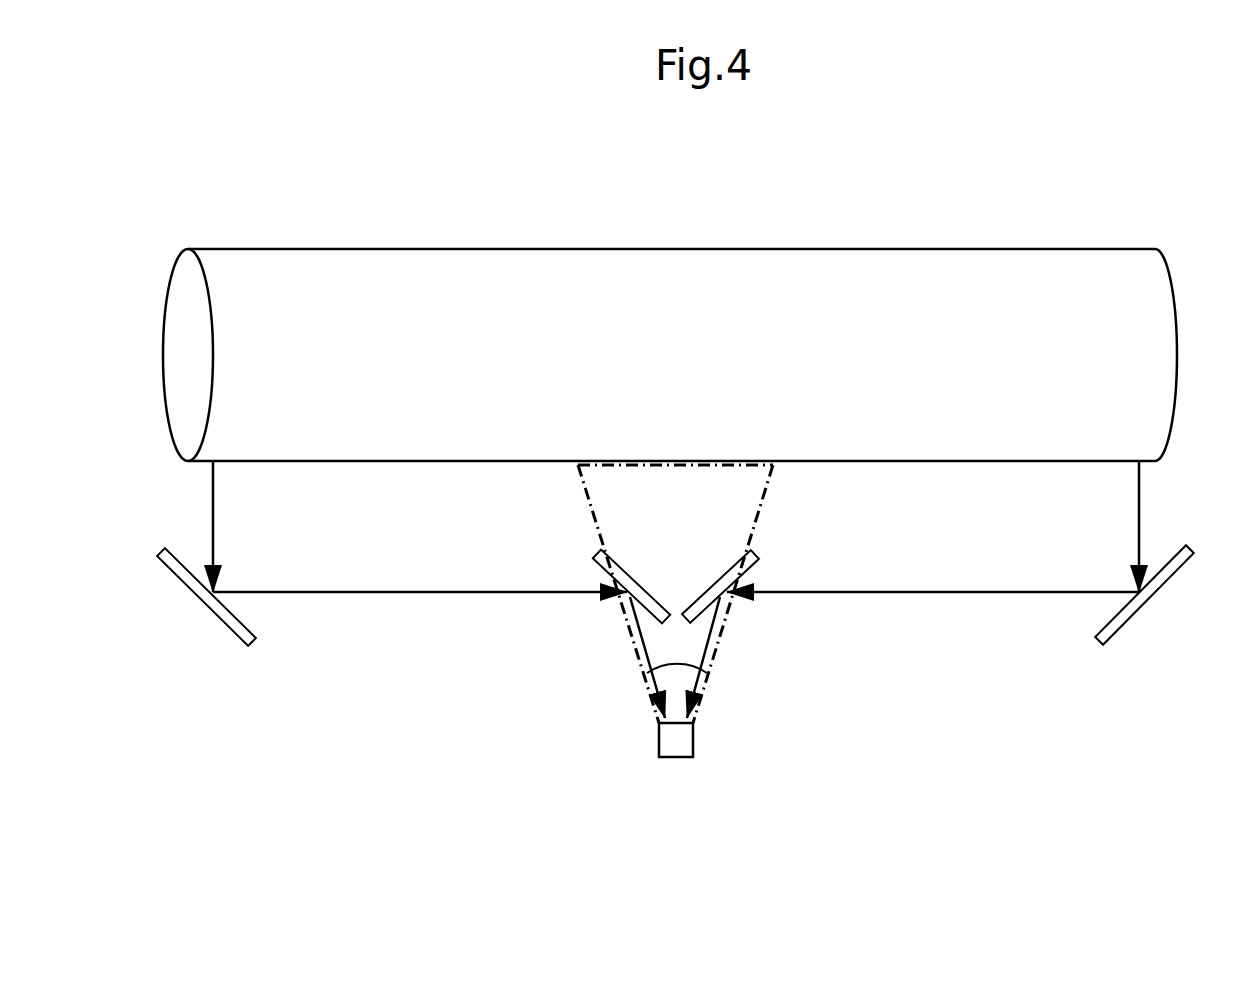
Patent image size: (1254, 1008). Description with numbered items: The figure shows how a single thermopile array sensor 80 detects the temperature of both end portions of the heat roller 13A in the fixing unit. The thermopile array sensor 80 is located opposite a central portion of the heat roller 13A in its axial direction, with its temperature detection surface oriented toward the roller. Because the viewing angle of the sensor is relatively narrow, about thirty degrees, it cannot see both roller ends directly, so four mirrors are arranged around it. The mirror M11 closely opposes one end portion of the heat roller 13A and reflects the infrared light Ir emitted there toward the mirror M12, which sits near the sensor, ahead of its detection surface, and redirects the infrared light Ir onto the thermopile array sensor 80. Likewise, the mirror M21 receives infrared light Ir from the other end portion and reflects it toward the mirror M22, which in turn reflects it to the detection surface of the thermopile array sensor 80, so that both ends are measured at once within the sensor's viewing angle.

The heat roller 13A is at (990, 249).
The infrared light Ir is at (215, 515).
The mirror M11 is at (210, 610).
The mirror M12 is at (593, 550).
The mirror M21 is at (1143, 607).
The mirror M22 is at (757, 550).
The thermopile array sensor 80 is at (697, 742).